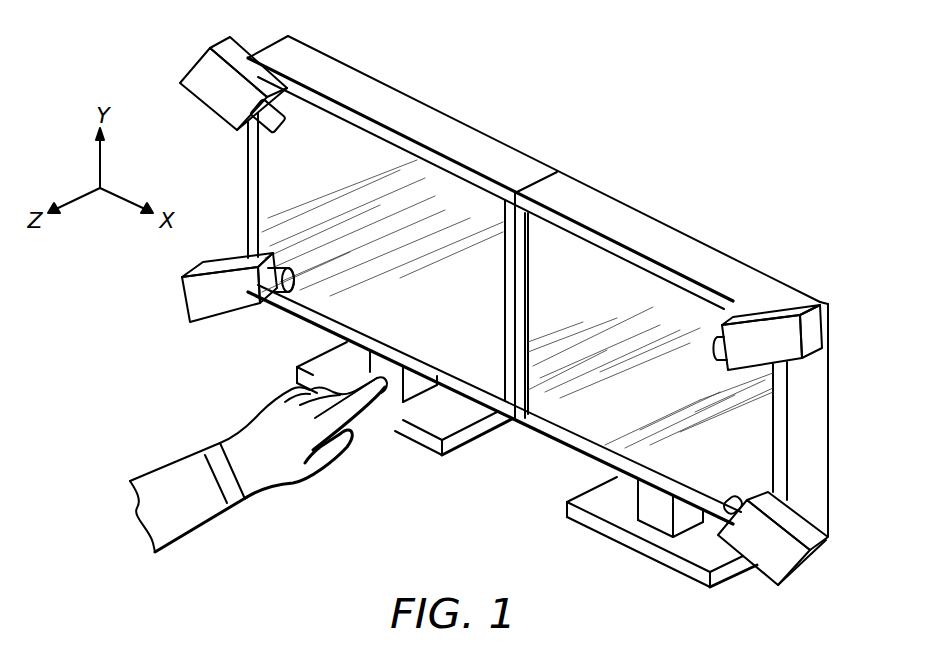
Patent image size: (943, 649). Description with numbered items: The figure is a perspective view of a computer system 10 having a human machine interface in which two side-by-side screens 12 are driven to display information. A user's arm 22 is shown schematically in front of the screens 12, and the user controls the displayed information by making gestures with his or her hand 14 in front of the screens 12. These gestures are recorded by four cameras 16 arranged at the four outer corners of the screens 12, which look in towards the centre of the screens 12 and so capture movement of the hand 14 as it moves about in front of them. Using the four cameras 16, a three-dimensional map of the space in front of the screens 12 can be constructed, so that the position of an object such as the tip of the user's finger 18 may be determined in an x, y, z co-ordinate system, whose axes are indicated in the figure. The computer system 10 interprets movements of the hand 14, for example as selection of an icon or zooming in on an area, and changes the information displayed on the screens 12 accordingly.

The computer system 10 is at (636, 141).
The screens 12 is at (413, 107).
The hand 14 is at (260, 423).
The cameras 16 is at (202, 72).
The finger 18 is at (383, 394).
The arm 22 is at (192, 522).